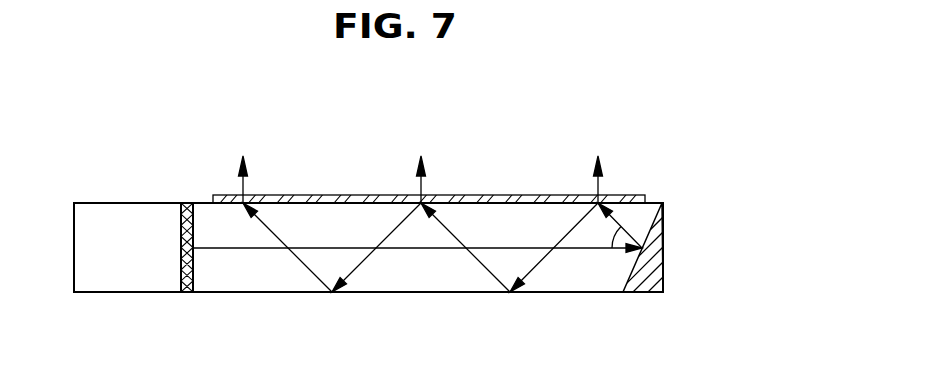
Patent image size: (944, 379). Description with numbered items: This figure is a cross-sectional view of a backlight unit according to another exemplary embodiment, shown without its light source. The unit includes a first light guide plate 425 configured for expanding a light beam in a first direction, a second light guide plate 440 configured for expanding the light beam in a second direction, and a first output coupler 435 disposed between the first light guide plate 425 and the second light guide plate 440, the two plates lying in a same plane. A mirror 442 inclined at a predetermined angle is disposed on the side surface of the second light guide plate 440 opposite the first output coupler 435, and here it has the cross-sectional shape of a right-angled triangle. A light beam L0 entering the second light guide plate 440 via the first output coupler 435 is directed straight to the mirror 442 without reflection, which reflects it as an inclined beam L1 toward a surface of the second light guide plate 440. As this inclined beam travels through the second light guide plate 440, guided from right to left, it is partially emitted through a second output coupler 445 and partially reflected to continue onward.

The first light guide plate 425 is at (128, 285).
The first output coupler 435 is at (186, 285).
The second light guide plate 440 is at (278, 285).
The mirror 442 is at (648, 287).
The second output coupler 445 is at (643, 197).
The light beam L0 is at (416, 248).
The reflected light L1 is at (613, 249).